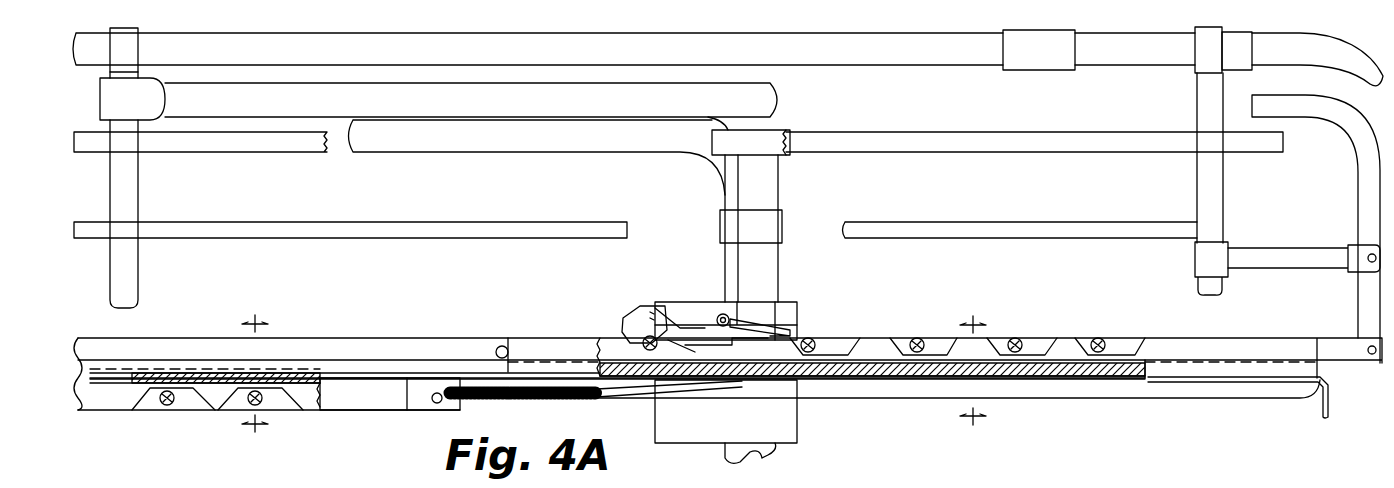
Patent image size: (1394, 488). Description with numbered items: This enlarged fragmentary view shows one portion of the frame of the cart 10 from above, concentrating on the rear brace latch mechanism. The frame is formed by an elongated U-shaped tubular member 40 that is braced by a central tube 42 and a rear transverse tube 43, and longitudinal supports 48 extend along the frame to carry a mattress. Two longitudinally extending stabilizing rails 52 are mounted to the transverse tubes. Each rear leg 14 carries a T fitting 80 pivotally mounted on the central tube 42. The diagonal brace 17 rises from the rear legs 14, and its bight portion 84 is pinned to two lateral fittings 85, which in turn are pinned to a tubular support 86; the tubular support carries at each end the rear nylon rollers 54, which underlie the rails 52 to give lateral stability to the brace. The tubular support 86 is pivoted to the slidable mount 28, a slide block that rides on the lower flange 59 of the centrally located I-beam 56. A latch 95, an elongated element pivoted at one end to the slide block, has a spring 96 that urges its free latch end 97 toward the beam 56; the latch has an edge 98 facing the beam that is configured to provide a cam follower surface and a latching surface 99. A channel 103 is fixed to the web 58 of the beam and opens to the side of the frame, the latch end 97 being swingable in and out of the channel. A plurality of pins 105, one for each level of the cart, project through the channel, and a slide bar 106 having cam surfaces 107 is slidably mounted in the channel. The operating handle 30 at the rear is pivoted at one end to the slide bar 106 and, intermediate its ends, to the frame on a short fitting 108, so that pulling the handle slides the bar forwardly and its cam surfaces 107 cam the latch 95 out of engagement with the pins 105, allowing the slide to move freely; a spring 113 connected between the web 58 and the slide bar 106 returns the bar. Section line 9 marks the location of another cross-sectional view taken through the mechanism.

The U-shaped tubular member 40 is at (873, 63).
The T fitting 80 is at (132, 99).
The rear legs 14 is at (471, 100).
The diagonal brace 17 is at (537, 157).
The stabilizing rails 52 is at (235, 170).
The rear nylon rollers 54 is at (749, 136).
The central tube 42 is at (132, 205).
The longitudinal supports 48 is at (505, 244).
The bight portion 84 is at (728, 262).
The tubular support 86 is at (778, 266).
The lateral fittings 85 is at (774, 228).
The rear transverse tube 43 is at (1223, 200).
The operating handle 30 is at (1362, 158).
The short fitting 108 is at (1295, 275).
The slidable mount 28 is at (824, 307).
The spring 96 is at (742, 316).
The latching surface 99 is at (660, 322).
The latch 95 is at (639, 298).
The latch end 97 is at (628, 332).
The edge 98 is at (702, 343).
The slide bar 106 is at (415, 340).
The channel 103 is at (312, 375).
The cam surfaces 107 is at (840, 352).
The pins 105 is at (152, 418).
The spring 113 is at (500, 407).
The I-beam 56 is at (1067, 386).
The web 58 is at (1115, 380).
The lower flange 59 is at (1150, 394).
The cart 10 is at (270, 374).
The section line 9 is at (978, 371).